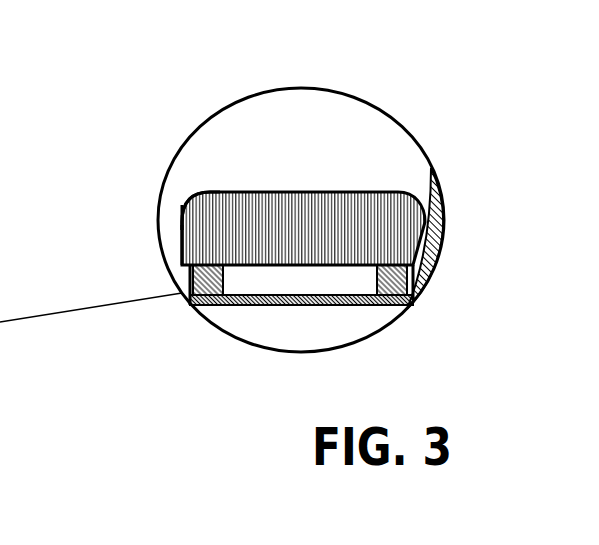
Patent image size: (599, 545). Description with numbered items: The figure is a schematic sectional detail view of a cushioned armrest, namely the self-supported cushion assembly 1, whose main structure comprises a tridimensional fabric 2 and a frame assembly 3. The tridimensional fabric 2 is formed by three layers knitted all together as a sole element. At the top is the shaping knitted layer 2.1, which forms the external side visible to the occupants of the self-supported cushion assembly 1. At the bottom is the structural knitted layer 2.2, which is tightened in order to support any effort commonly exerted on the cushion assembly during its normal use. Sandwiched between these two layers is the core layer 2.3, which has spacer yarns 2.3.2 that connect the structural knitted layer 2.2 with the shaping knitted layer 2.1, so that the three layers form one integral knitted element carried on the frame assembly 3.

The self-supported cushion assembly 1 is at (374, 69).
The tridimensional fabric 2 is at (277, 192).
The shaping knitted layer 2.1 is at (178, 215).
The structural knitted layer 2.2 is at (372, 263).
The core layer 2.3 is at (177, 233).
The spacer yarns 2.3.2 is at (198, 190).
The frame assembly 3 is at (195, 297).